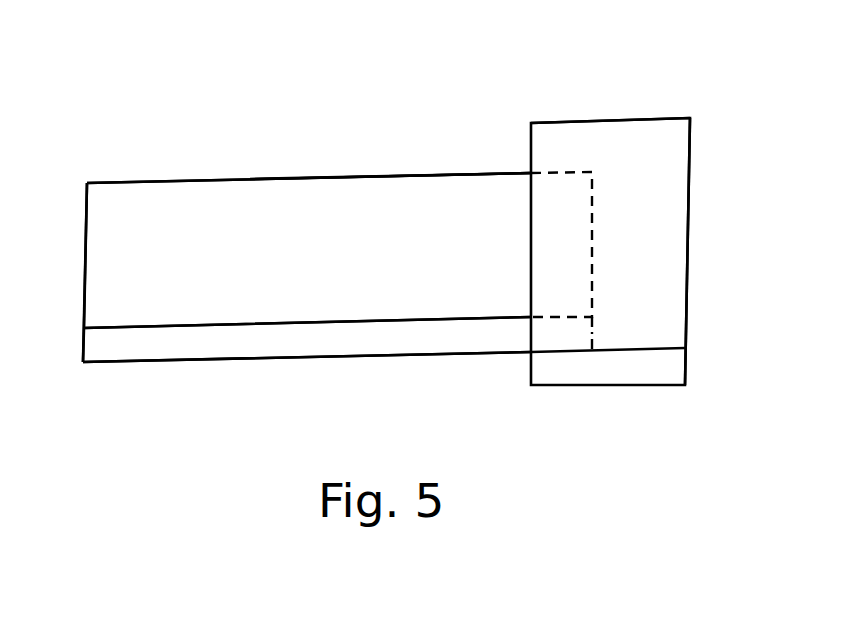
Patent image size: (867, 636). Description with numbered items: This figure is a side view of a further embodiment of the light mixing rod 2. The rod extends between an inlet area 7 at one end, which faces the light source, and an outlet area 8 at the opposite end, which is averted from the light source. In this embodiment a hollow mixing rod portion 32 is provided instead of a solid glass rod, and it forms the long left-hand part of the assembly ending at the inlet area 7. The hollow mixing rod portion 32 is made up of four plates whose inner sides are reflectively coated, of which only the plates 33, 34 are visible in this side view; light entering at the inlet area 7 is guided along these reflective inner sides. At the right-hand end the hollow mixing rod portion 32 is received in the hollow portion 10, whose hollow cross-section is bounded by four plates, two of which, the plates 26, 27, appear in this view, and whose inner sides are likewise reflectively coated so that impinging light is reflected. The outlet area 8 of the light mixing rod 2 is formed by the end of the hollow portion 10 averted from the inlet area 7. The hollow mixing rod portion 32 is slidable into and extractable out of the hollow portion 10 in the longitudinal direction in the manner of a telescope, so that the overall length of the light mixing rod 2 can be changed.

The light mixing rod 2 is at (392, 167).
The inlet area 7 is at (83, 292).
The outlet area 8 is at (687, 293).
The hollow portion 10 is at (573, 122).
The plate 26 is at (592, 385).
The plate 27 is at (658, 118).
The hollow mixing rod portion 32 is at (172, 182).
The plate 33 is at (287, 178).
The plate 34 is at (247, 361).